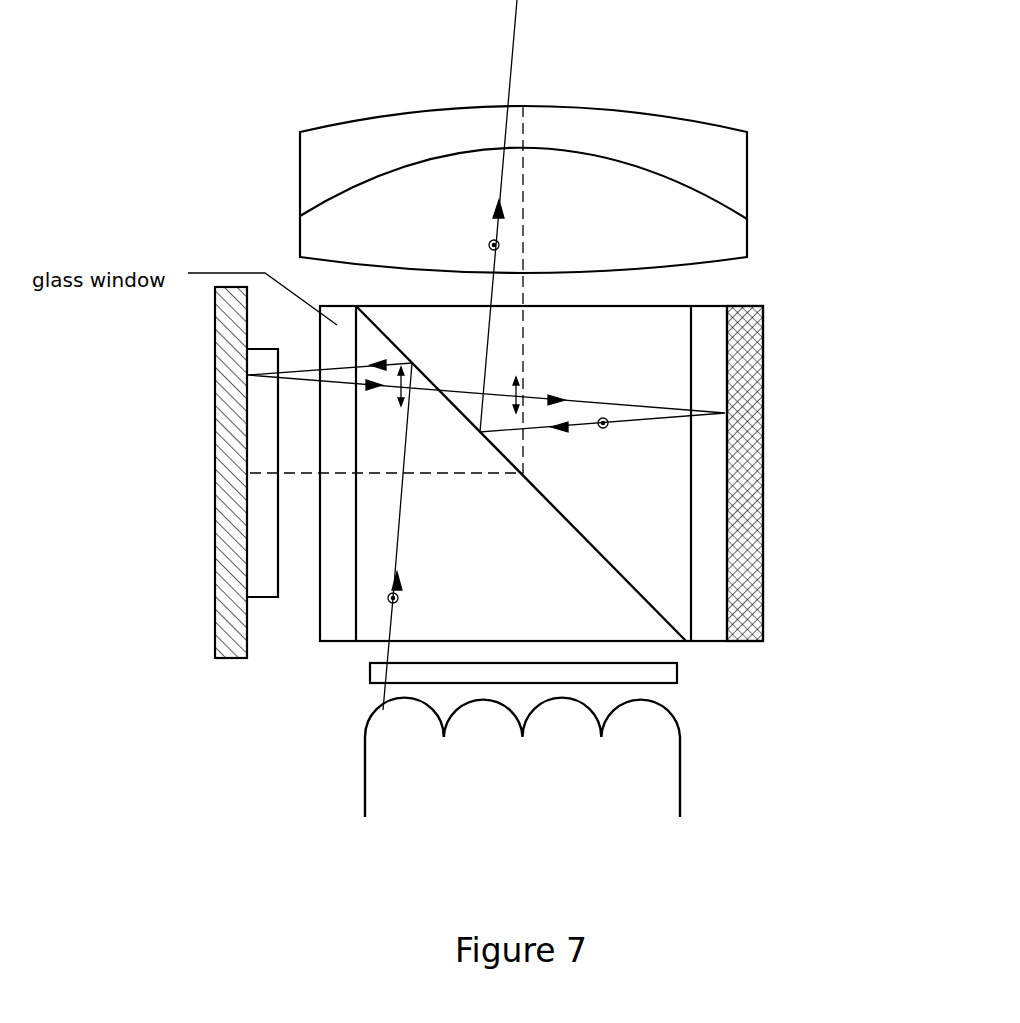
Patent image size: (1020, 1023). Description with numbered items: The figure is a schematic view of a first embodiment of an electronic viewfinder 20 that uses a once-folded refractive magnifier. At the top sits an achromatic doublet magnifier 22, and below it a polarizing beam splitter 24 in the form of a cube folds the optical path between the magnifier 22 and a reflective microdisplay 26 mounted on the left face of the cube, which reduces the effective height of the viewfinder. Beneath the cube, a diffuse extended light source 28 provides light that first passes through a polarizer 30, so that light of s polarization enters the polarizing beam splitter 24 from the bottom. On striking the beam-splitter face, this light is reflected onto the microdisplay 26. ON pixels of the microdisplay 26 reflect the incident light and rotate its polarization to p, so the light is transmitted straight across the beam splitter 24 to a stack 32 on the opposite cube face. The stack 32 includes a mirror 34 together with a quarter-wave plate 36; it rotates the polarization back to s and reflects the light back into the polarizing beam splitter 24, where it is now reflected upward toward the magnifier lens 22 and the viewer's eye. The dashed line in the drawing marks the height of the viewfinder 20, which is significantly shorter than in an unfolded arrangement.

The electronic viewfinder 20 is at (208, 792).
The achromatic doublet magnifier 22 is at (268, 225).
The polarizing beam splitter 24 is at (665, 618).
The microdisplay 26 is at (262, 575).
The diffuse extended light source 28 is at (578, 728).
The polarizer 30 is at (373, 673).
The stack 32 is at (729, 672).
The mirror 34 is at (763, 445).
The quarter-wave plate 36 is at (707, 322).